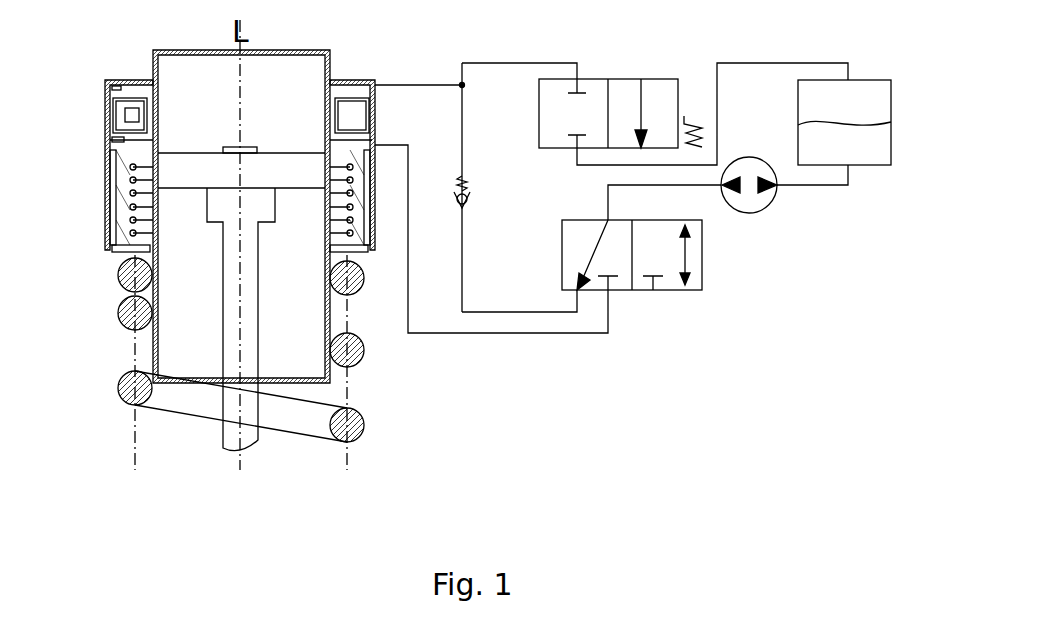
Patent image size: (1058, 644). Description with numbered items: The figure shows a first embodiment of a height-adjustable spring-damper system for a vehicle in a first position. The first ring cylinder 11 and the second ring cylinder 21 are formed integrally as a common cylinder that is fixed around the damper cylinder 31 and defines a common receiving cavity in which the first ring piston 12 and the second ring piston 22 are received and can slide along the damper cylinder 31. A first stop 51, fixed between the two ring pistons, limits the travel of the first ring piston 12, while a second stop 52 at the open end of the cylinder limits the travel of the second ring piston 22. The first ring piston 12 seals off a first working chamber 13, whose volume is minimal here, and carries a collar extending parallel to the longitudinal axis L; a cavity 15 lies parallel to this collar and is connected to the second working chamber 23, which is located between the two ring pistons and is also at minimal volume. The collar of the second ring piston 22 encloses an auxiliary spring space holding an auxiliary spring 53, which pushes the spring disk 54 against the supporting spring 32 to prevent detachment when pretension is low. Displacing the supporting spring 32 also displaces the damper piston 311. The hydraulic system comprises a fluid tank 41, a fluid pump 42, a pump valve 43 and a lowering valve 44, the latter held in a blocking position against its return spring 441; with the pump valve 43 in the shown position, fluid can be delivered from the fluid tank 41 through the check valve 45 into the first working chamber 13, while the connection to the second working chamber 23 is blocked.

The first ring cylinder 11 is at (122, 86).
The first ring piston 12 is at (133, 98).
The first working chamber 13 is at (111, 76).
The cavity 15 is at (135, 113).
The second ring cylinder 21 is at (112, 204).
The second ring piston 22 is at (122, 210).
The second working chamber 23 is at (110, 146).
The damper cylinder 31 is at (162, 338).
The damper piston 311 is at (192, 167).
The supporting spring 32 is at (140, 412).
The fluid tank 41 is at (818, 90).
The fluid pump 42 is at (768, 203).
The pump valve 43 is at (590, 225).
The lowering valve 44 is at (585, 84).
The return spring 441 is at (690, 104).
The check valve 45 is at (478, 194).
The first stop 51 is at (373, 128).
The second stop 52 is at (125, 262).
The auxiliary spring 53 is at (125, 308).
The spring disk 54 is at (360, 262).